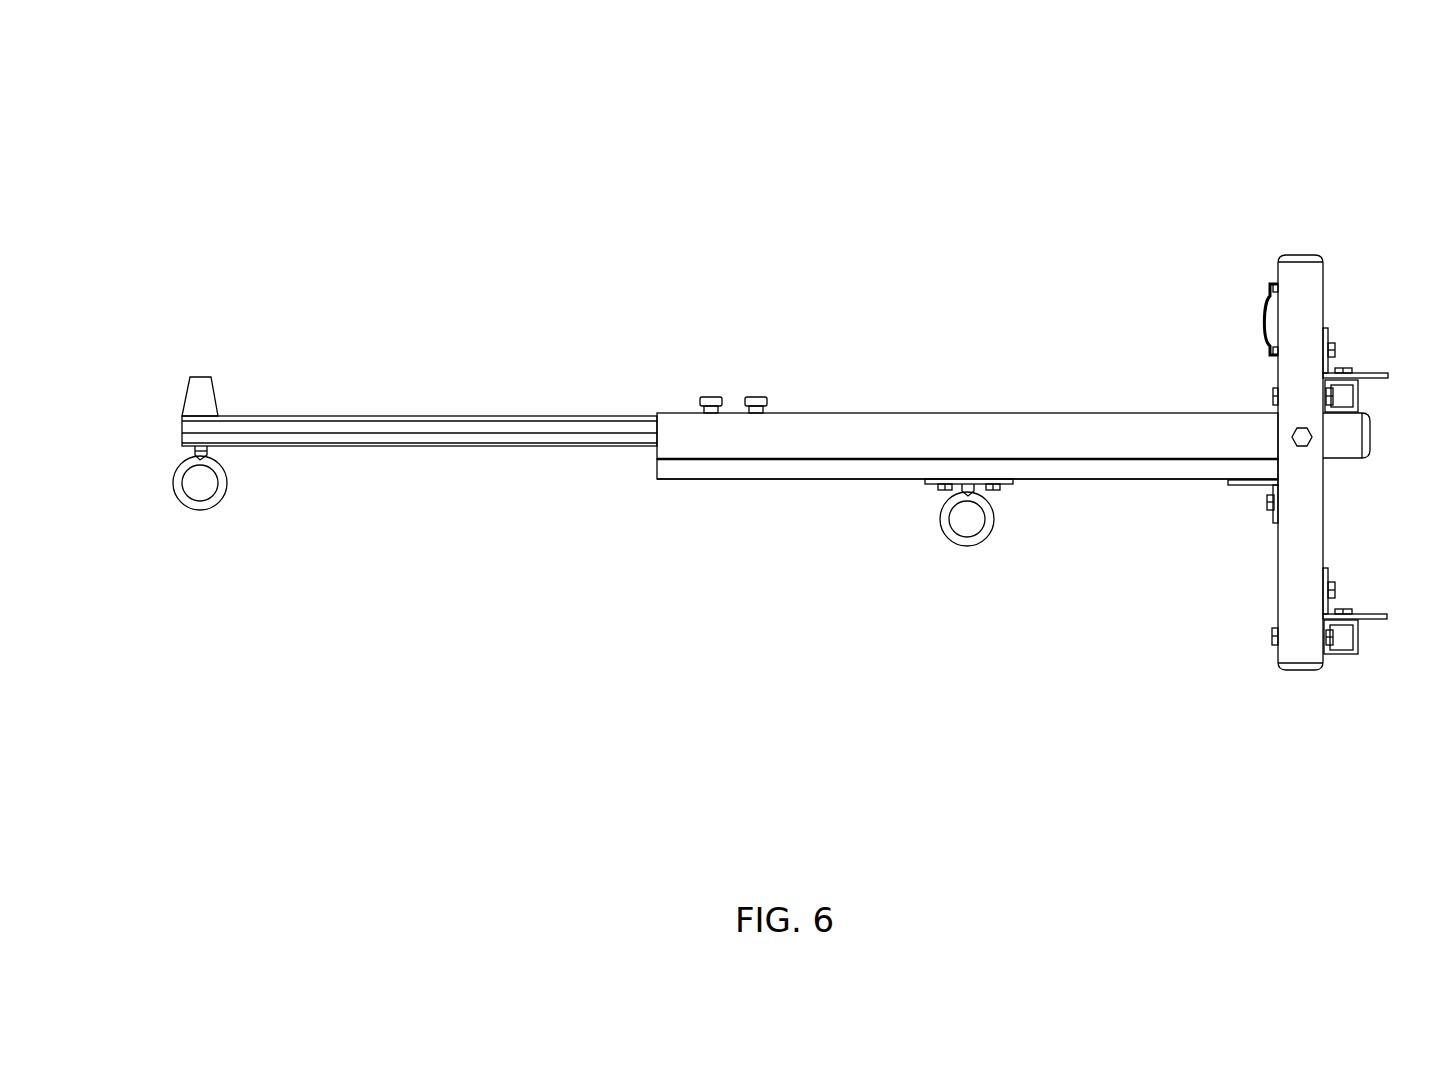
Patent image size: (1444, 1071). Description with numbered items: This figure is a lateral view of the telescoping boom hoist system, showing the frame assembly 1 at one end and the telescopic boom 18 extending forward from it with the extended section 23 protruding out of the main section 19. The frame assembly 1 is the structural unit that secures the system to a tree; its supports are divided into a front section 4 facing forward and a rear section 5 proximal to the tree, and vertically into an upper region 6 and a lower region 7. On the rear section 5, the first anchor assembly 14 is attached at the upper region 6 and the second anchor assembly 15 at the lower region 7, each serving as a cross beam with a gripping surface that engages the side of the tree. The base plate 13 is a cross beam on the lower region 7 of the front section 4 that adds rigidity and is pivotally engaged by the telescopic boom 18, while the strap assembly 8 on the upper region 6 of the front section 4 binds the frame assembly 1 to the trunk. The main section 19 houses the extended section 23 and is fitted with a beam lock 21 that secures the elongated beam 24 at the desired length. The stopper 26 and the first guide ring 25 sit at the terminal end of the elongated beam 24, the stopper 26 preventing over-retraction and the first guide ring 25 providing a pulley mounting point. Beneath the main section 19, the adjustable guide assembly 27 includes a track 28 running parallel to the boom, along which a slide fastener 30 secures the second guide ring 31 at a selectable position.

The frame assembly 1 is at (1296, 212).
The front section 4 is at (1242, 359).
The rear section 5 is at (1329, 293).
The upper region 6 is at (1310, 369).
The lower region 7 is at (1310, 588).
The strap assembly 8 is at (1267, 298).
The base plate 13 is at (1260, 486).
The first anchor assembly 14 is at (1367, 352).
The second anchor assembly 15 is at (1344, 667).
The telescopic boom 18 is at (882, 290).
The main section 19 is at (1067, 384).
The beam lock 21 is at (704, 394).
The extended section 23 is at (373, 406).
The elongated beam 24 is at (435, 438).
The first guide ring 25 is at (213, 510).
The stopper 26 is at (203, 377).
The adjustable guide assembly 27 is at (835, 518).
The track 28 is at (709, 468).
The slide fastener 30 is at (1013, 481).
The second guide ring 31 is at (974, 543).